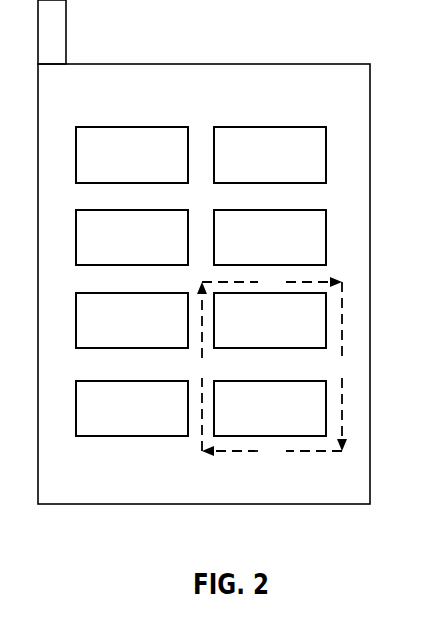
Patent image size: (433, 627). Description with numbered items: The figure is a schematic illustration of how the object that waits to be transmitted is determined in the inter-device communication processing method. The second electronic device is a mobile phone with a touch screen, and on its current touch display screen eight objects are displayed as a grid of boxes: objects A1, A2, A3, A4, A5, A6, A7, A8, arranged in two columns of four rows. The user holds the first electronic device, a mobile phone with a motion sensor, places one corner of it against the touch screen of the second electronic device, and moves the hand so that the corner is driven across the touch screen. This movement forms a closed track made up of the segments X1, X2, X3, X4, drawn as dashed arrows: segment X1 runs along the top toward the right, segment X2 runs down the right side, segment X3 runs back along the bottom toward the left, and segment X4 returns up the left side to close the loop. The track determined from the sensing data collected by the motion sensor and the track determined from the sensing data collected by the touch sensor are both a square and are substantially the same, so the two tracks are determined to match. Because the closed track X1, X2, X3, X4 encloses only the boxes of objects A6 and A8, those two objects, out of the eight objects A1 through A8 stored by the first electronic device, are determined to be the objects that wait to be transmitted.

The object A1 is at (132, 154).
The object A2 is at (270, 154).
The object A3 is at (132, 237).
The object A4 is at (270, 237).
The object A5 is at (132, 320).
The object A6 is at (270, 320).
The object A7 is at (132, 408).
The object A8 is at (270, 408).
The track segment X1 is at (272, 281).
The track segment X2 is at (341, 366).
The track segment X3 is at (272, 450).
The track segment X4 is at (200, 366).